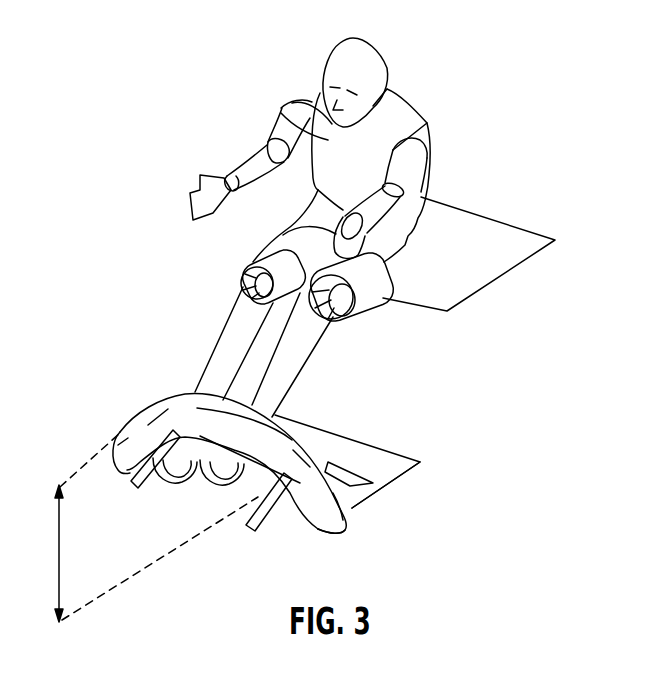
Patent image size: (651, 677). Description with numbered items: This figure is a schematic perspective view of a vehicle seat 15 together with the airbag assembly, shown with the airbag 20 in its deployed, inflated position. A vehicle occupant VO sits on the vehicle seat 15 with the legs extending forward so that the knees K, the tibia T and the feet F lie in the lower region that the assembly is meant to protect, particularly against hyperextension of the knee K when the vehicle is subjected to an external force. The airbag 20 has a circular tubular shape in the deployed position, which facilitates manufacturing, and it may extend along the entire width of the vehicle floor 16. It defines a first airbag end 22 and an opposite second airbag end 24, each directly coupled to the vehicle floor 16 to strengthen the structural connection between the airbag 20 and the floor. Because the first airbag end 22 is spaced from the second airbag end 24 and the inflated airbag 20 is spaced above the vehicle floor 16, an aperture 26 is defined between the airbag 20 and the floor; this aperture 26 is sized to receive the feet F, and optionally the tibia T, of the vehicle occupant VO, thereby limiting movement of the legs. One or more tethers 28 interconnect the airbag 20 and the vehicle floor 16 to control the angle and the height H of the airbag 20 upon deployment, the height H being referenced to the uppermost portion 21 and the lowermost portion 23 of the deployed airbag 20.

The vehicle occupant VO is at (327, 137).
The knee K is at (248, 280).
The tibia T is at (233, 327).
The feet F is at (173, 463).
The height H is at (58, 556).
The vehicle seat 15 is at (527, 247).
The vehicle floor 16 is at (352, 457).
The airbag 20 is at (218, 441).
The uppermost portion 21 is at (197, 393).
The first airbag end 22 is at (120, 433).
The lowermost portion 23 is at (326, 531).
The second airbag end 24 is at (353, 508).
The aperture 26 is at (273, 507).
The tether 28 is at (237, 487).